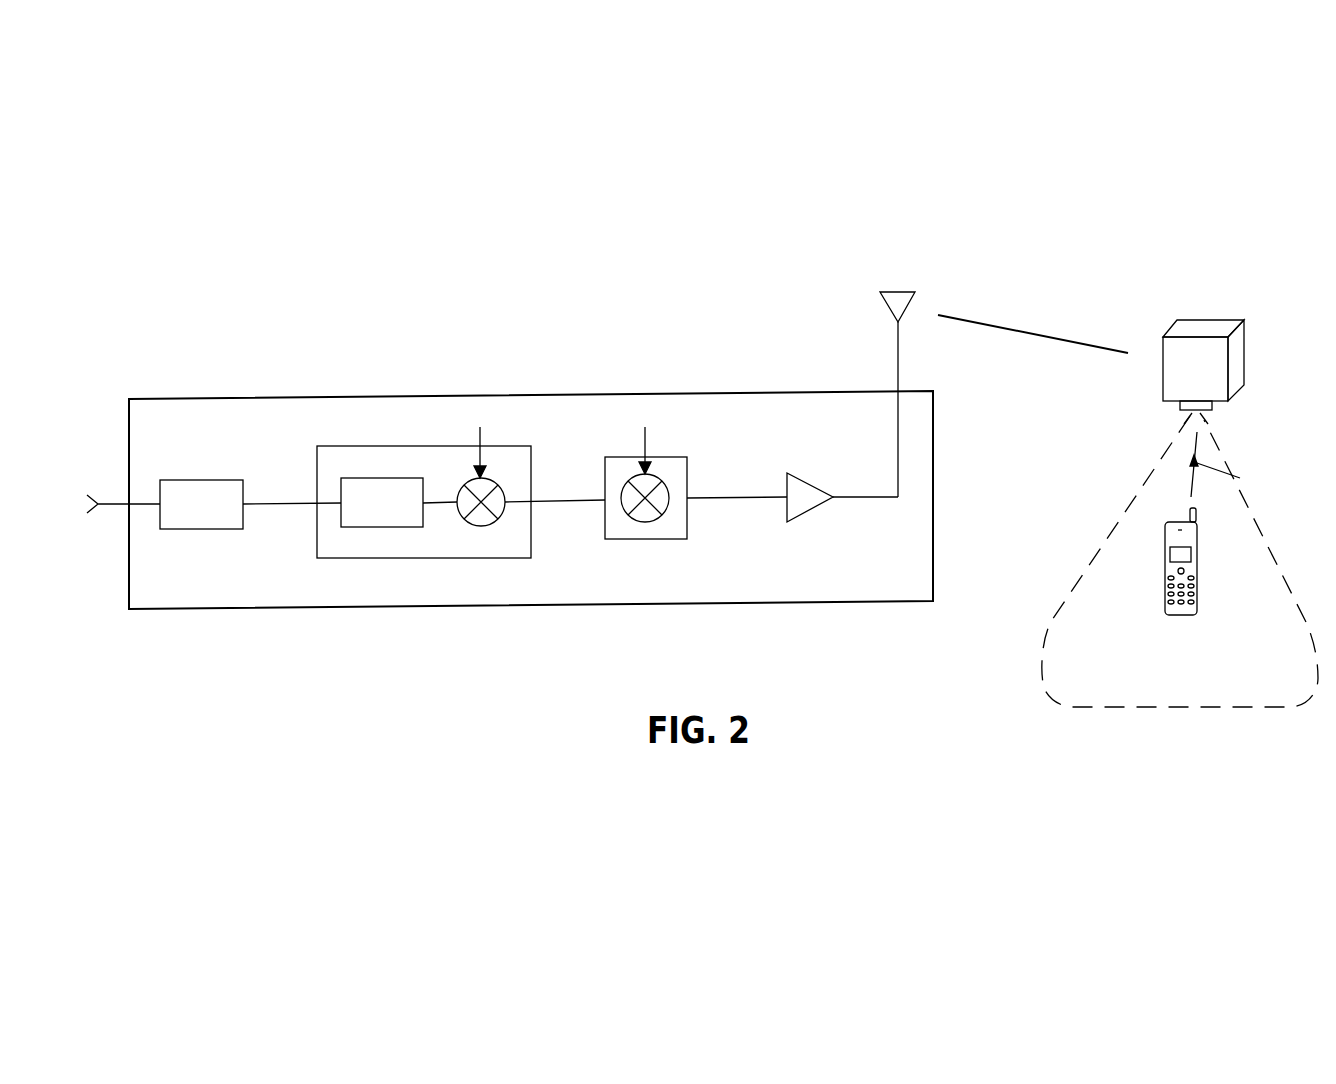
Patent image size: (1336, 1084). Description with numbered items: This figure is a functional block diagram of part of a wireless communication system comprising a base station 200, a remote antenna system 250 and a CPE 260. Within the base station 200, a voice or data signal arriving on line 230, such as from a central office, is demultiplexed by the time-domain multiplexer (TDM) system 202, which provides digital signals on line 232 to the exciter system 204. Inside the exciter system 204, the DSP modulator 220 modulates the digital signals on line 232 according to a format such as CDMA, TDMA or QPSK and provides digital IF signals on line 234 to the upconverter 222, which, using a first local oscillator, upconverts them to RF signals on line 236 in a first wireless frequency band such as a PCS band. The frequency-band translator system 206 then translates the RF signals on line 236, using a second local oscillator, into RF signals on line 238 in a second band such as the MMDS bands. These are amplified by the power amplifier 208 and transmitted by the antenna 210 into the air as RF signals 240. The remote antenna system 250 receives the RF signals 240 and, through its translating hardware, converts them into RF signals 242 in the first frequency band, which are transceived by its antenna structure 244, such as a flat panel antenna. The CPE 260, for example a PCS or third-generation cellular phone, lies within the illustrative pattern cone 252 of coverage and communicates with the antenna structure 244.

The base station 200 is at (632, 392).
The time-domain multiplexer (TDM) system 202 is at (203, 480).
The exciter system 204 is at (408, 558).
The frequency-band translator system 206 is at (675, 539).
The power amplifier 208 is at (806, 473).
The antenna 210 is at (898, 292).
The digital signal process (DSP) modulator 220 is at (378, 478).
The upconverter 222 is at (481, 527).
The line 230 is at (116, 504).
The line 232 is at (288, 503).
The line 234 is at (445, 502).
The line 236 is at (577, 500).
The line 238 is at (733, 498).
The RF signals 240 is at (1020, 332).
The RF signals 242 is at (1240, 478).
The antenna structure 244 is at (1217, 405).
The remote antenna system 250 is at (1213, 337).
The pattern cone 252 is at (1118, 710).
The CPE 260 is at (1197, 561).